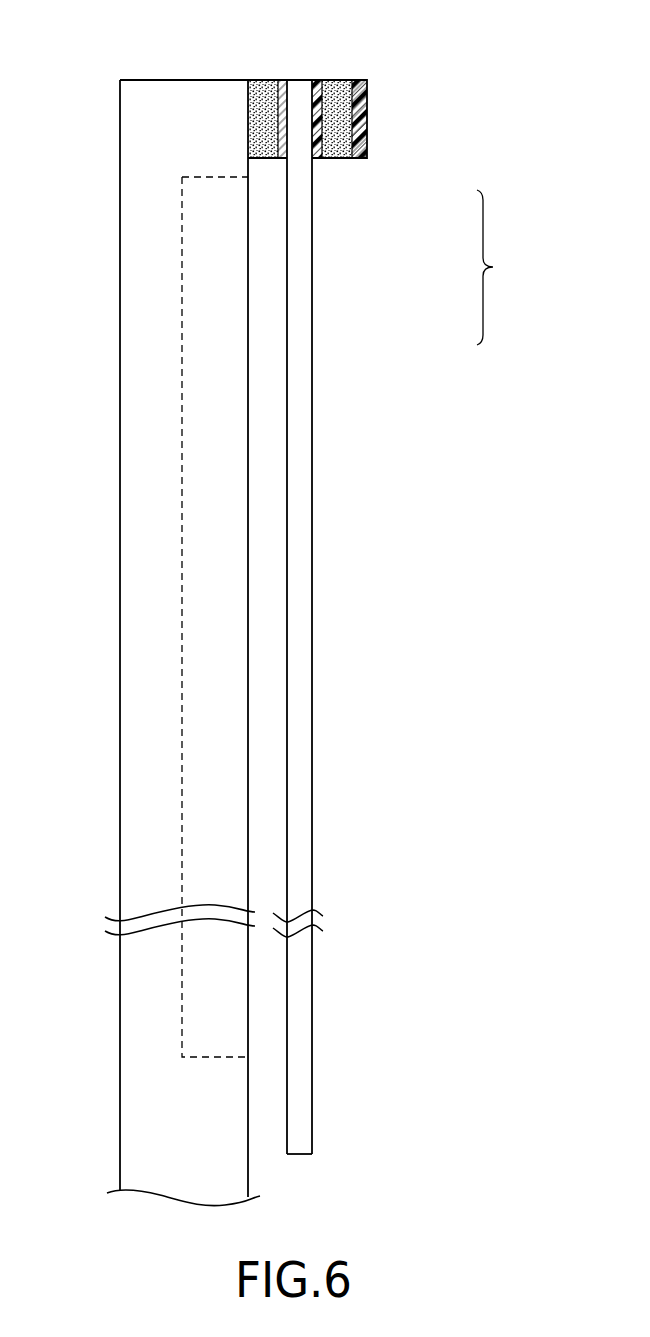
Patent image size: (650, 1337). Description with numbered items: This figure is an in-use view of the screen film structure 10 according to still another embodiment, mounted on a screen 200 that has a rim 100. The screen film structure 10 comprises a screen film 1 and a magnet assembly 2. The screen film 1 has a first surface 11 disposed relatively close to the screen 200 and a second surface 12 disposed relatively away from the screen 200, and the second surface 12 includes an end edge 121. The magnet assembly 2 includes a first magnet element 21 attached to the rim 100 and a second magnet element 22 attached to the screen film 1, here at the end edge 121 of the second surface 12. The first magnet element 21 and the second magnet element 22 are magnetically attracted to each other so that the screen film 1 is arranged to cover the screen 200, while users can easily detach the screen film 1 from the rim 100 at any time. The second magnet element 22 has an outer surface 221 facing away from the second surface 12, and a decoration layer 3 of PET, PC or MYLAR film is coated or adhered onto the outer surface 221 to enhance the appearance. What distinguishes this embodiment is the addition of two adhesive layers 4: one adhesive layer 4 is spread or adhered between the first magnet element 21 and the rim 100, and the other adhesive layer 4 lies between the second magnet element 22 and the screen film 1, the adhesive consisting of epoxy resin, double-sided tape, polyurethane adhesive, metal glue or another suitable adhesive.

The rim 100 is at (207, 123).
The screen 200 is at (200, 498).
The screen film 1 is at (371, 617).
The first surface 11 is at (288, 587).
The second surface 12 is at (313, 495).
The end edge 121 is at (315, 118).
The magnet assembly 2 is at (352, 121).
The first magnet element 21 is at (267, 92).
The second magnet element 22 is at (337, 158).
The outer surface 221 is at (366, 114).
The decoration layer 3 is at (365, 93).
The adhesive layer 4 is at (282, 95).
The screen film structure 10 is at (503, 267).